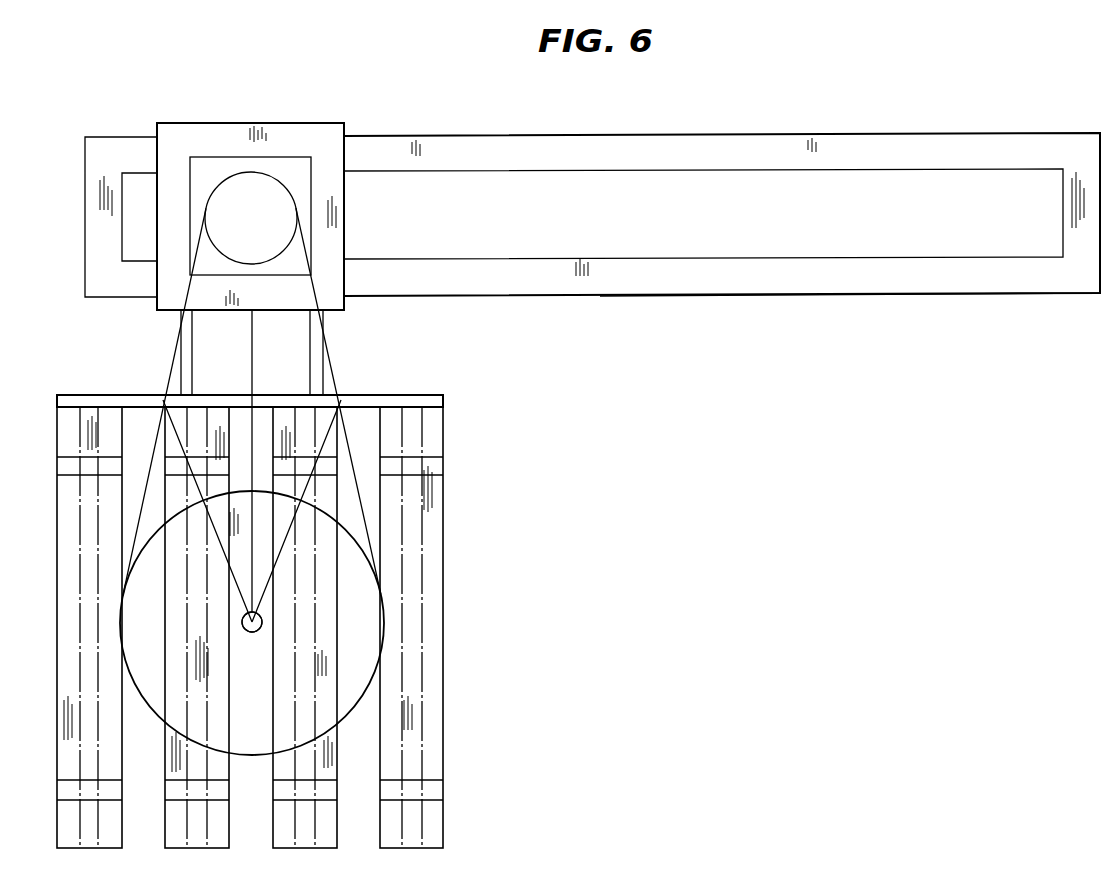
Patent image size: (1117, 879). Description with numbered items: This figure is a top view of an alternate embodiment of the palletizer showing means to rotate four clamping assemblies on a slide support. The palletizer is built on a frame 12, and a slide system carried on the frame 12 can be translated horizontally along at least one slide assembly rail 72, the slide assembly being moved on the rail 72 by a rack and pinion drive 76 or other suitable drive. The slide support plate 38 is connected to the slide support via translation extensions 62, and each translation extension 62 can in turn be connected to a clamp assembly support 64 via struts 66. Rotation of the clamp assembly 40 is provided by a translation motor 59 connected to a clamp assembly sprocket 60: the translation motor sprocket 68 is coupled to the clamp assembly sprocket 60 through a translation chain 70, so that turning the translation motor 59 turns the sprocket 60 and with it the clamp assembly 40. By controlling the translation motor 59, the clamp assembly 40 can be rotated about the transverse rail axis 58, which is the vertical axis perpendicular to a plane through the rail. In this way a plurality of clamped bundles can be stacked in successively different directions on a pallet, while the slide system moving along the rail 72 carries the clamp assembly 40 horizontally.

The frame 12 is at (237, 123).
The translation motor 59 is at (207, 157).
The translation motor sprocket 68 is at (293, 188).
The slide assembly rail 72 is at (740, 150).
The rack and pinion drive 76 is at (768, 278).
The translation chain 70 is at (170, 367).
The translation extension 62 is at (329, 345).
The slide support plate 38 is at (443, 400).
The clamp assembly 40 is at (532, 532).
The clamp assembly sprocket 60 is at (384, 635).
The struts 66 is at (220, 567).
The clamp assembly support 64 is at (252, 622).
The transverse rail axis 58 is at (252, 632).